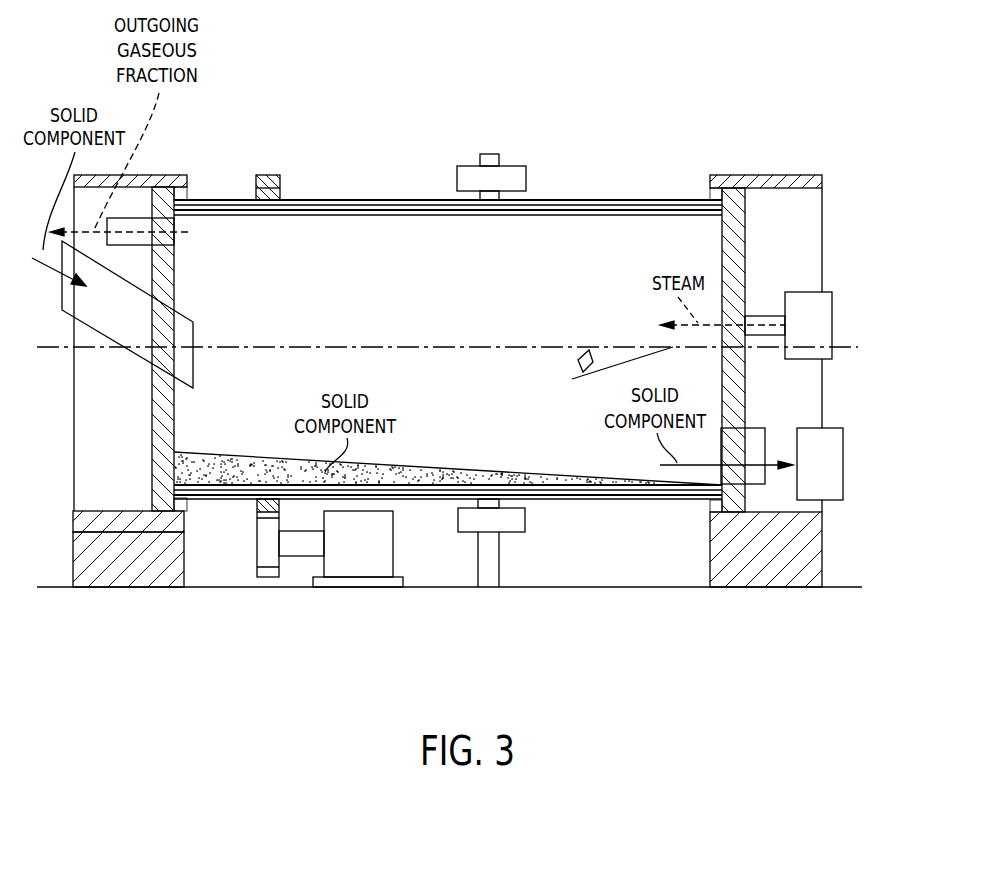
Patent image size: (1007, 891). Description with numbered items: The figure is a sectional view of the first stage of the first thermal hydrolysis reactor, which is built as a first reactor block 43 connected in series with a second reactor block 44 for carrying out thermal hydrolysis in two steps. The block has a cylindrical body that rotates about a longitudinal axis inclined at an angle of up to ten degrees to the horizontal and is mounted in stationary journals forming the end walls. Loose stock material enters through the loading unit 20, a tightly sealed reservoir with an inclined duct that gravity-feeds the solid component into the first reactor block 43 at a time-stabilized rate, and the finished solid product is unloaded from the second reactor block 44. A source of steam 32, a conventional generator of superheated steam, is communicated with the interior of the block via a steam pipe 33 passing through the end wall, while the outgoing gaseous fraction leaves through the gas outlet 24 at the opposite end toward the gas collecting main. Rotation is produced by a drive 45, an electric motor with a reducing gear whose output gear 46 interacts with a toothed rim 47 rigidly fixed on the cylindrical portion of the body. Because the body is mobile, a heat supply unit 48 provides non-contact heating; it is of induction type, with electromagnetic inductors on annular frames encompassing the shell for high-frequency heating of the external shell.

The loading unit 20 is at (138, 331).
The gas outlet 24 is at (117, 219).
The source of steam 32 is at (819, 337).
The steam pipe 33 is at (776, 316).
The first reactor block 43 is at (433, 228).
The second reactor block 44 is at (830, 480).
The drive 45 is at (368, 557).
The output gear 46 is at (270, 560).
The toothed rim 47 is at (263, 177).
The heat supply unit 48 is at (471, 166).